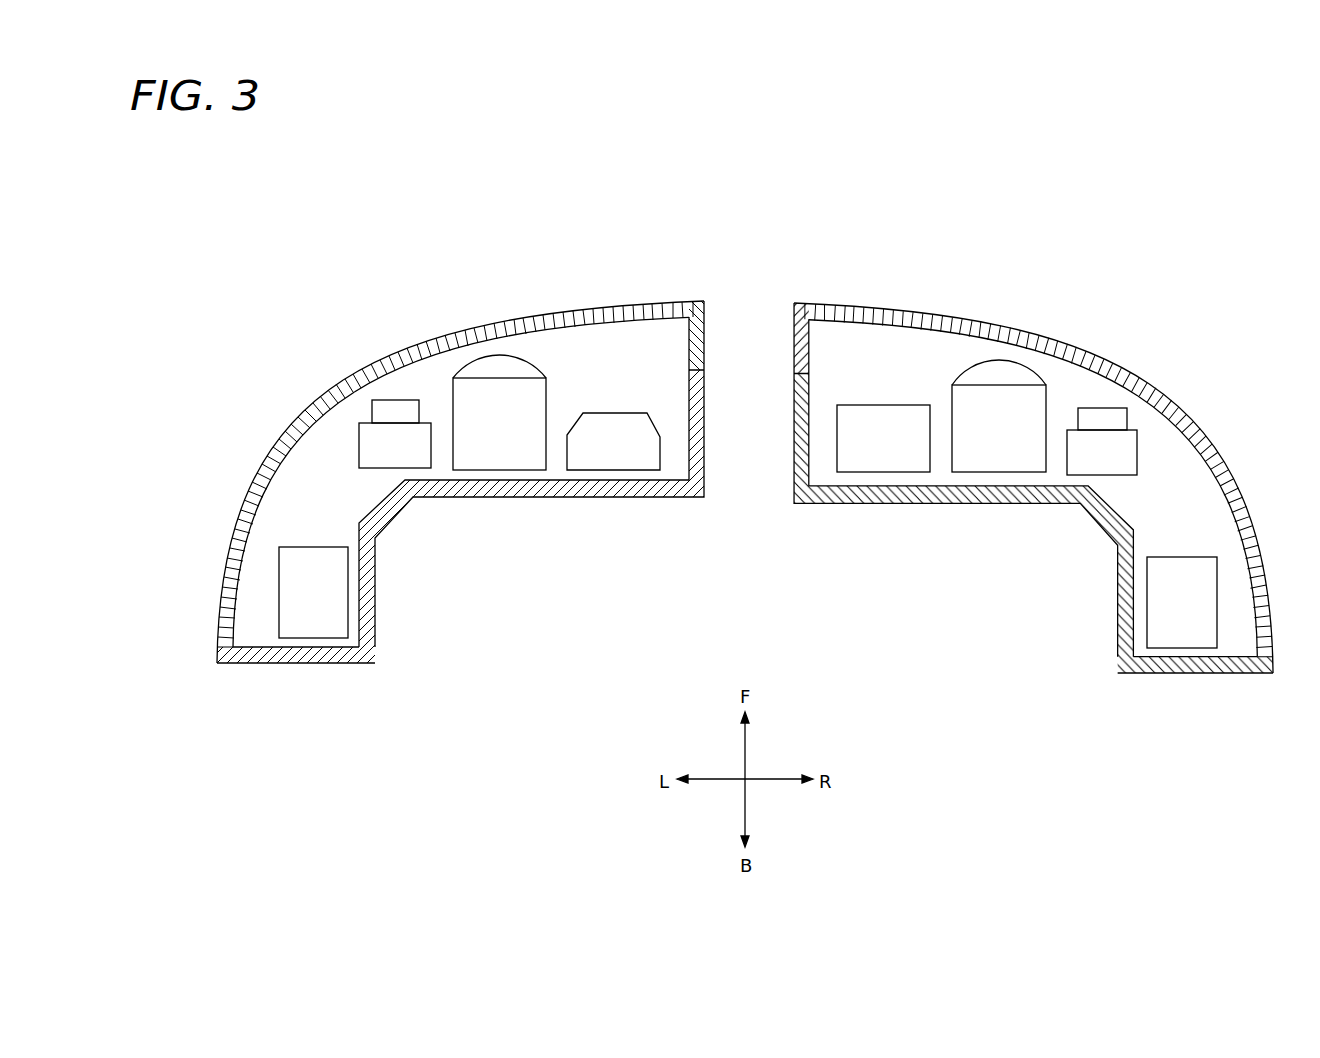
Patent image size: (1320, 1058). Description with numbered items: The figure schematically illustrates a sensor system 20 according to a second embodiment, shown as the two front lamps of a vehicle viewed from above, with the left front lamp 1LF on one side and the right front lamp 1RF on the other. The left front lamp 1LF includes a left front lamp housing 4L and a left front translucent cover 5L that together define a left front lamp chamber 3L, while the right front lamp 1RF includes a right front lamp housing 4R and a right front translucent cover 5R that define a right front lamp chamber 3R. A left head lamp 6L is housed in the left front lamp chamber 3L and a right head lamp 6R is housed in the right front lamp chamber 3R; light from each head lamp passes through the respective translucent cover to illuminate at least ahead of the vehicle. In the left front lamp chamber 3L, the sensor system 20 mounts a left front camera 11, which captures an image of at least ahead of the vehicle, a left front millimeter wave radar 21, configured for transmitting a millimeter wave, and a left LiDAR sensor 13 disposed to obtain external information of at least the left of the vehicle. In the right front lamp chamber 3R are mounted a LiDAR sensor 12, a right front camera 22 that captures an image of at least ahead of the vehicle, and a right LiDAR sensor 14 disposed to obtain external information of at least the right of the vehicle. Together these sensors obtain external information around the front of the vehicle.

The sensor system 20 is at (770, 205).
The left front lamp 1LF is at (432, 280).
The right front lamp 1RF is at (1138, 282).
The left front lamp chamber 3L is at (585, 332).
The right front lamp chamber 3R is at (953, 342).
The left front translucent cover 5L is at (307, 408).
The right front translucent cover 5R is at (1183, 427).
The left front lamp housing 4L is at (320, 668).
The right front lamp housing 4R is at (1172, 674).
The left front camera 11 is at (388, 455).
The left head lamp 6L is at (500, 458).
The left front millimeter wave radar 21 is at (612, 458).
The left LiDAR sensor 13 is at (337, 607).
The LiDAR sensor 12 is at (885, 460).
The right head lamp 6R is at (997, 460).
The right front camera 22 is at (1112, 470).
The right LiDAR sensor 14 is at (1157, 608).